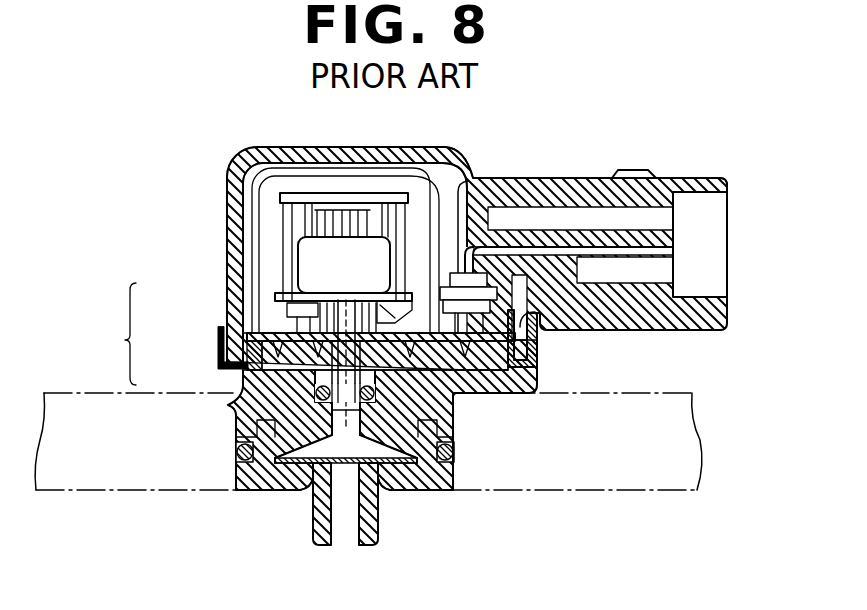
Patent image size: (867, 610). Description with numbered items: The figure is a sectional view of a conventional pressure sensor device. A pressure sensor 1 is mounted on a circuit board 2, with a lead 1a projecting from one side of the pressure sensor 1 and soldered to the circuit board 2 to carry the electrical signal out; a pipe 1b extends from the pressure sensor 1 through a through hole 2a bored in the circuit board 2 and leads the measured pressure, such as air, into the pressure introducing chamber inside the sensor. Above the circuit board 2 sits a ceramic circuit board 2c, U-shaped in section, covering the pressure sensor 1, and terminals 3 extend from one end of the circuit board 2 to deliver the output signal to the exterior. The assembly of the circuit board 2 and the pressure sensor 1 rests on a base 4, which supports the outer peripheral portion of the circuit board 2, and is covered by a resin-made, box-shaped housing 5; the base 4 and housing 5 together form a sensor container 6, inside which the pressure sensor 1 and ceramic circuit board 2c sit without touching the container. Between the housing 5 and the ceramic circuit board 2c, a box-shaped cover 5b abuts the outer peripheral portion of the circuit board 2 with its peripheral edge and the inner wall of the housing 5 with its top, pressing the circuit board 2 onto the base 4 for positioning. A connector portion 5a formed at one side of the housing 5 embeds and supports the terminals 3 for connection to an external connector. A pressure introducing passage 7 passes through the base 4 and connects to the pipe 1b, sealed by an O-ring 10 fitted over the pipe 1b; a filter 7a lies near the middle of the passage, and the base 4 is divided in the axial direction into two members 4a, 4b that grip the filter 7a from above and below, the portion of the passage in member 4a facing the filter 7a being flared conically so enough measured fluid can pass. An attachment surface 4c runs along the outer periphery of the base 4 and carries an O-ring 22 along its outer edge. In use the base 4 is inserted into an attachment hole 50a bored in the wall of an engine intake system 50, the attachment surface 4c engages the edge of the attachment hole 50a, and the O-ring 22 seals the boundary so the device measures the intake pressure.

The pressure sensor 1 is at (300, 252).
The lead 1a is at (283, 312).
The pipe 1b is at (342, 413).
The circuit board 2 is at (278, 322).
The through hole 2a is at (334, 345).
The ceramic circuit board 2c is at (308, 194).
The terminals 3 is at (647, 248).
The base 4 is at (230, 405).
The member 4a is at (237, 427).
The member 4b is at (244, 494).
The attachment surface 4c is at (453, 430).
The housing 5 is at (227, 315).
The connector portion 5a is at (668, 180).
The cover 5b is at (462, 178).
The sensor container 6 is at (116, 334).
The pressure introducing passage 7 is at (360, 540).
The filter 7a is at (305, 493).
The O-ring 10 is at (445, 402).
The O-ring 22 is at (236, 450).
The engine intake system 50 is at (612, 490).
The attachment hole 50a is at (440, 490).